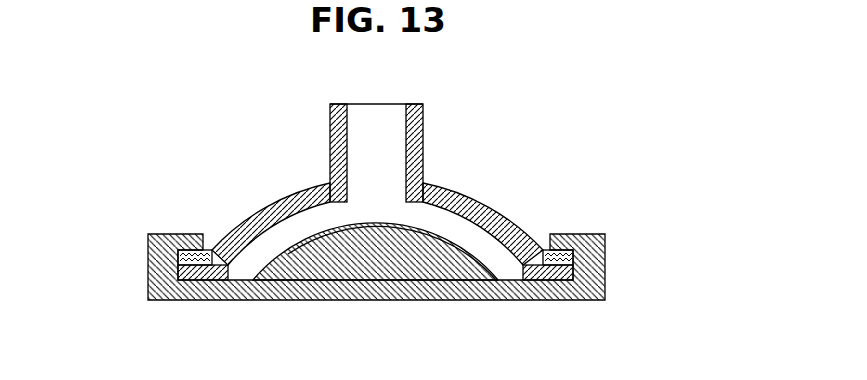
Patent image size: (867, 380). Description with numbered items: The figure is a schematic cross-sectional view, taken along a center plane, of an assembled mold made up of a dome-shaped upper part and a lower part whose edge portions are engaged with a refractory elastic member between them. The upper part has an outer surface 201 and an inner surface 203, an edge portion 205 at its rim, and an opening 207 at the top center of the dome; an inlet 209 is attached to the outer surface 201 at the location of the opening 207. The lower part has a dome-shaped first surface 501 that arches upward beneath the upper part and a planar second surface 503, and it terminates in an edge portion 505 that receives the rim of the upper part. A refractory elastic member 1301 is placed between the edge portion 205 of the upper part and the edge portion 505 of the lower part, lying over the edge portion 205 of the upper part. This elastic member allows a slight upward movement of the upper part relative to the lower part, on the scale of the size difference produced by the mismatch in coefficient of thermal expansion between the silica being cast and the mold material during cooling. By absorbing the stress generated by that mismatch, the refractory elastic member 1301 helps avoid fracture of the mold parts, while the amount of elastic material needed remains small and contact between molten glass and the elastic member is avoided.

The outer surface 201 is at (472, 193).
The inner surface 203 is at (264, 239).
The edge portion 205 is at (560, 273).
The opening 207 is at (383, 194).
The inlet 209 is at (423, 139).
The first surface 501 is at (297, 235).
The second surface 503 is at (460, 299).
The edge portion 505 is at (157, 281).
The refractory elastic member 1301 is at (545, 257).